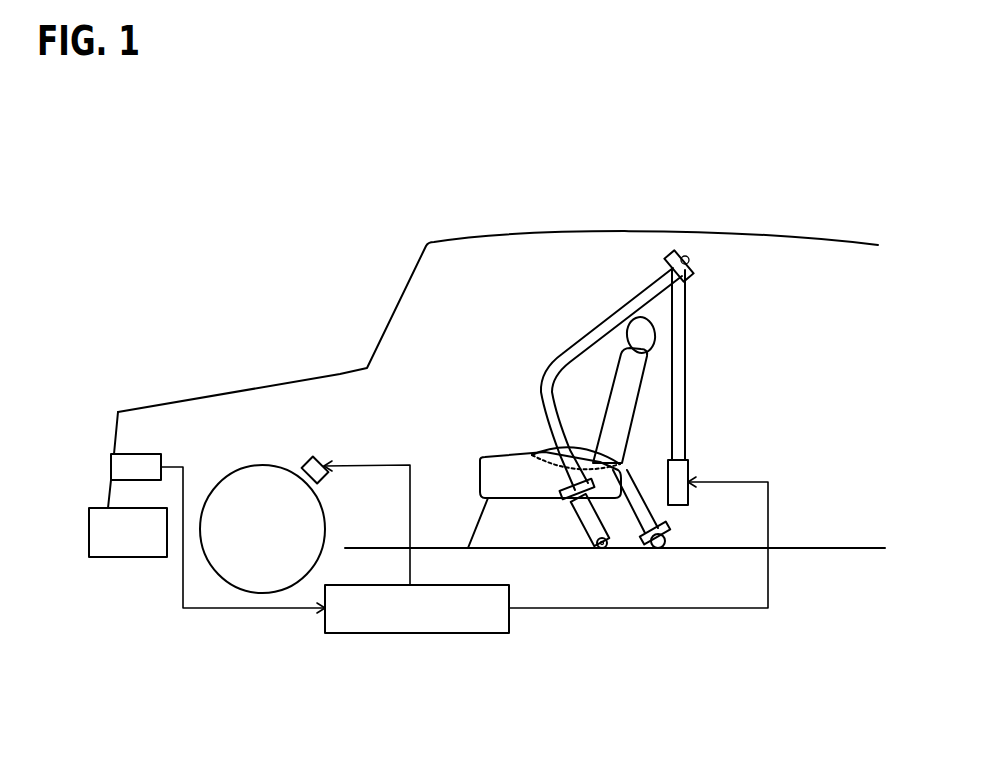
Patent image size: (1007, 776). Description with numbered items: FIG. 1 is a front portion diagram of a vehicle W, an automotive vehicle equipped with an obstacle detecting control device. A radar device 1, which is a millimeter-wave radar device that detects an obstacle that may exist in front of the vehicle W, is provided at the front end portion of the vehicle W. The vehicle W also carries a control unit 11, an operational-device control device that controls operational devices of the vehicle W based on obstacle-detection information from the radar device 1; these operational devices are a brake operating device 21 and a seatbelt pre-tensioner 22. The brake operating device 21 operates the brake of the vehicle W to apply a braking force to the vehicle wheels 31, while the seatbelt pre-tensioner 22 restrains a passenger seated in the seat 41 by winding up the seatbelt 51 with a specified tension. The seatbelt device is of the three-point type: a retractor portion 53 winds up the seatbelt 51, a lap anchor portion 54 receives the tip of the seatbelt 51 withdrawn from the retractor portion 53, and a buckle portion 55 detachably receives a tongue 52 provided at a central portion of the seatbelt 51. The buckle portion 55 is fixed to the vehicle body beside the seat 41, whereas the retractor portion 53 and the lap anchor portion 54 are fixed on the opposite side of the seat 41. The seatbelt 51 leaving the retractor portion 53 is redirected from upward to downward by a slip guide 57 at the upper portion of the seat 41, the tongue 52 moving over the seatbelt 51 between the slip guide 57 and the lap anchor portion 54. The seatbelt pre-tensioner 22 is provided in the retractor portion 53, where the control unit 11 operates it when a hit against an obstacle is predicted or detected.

The radar device 1 is at (110, 466).
The control unit 11 is at (397, 634).
The brake operating device 21 is at (306, 456).
The seatbelt pre-tensioner 22 is at (749, 387).
The vehicle wheels 31 is at (248, 466).
The seat 41 is at (493, 450).
The seatbelt 51 is at (608, 316).
The tongue 52 is at (578, 503).
The retractor portion 53 is at (688, 466).
The lap anchor portion 54 is at (668, 535).
The buckle portion 55 is at (590, 532).
The slip guide 57 is at (693, 264).
The vehicle W is at (545, 233).